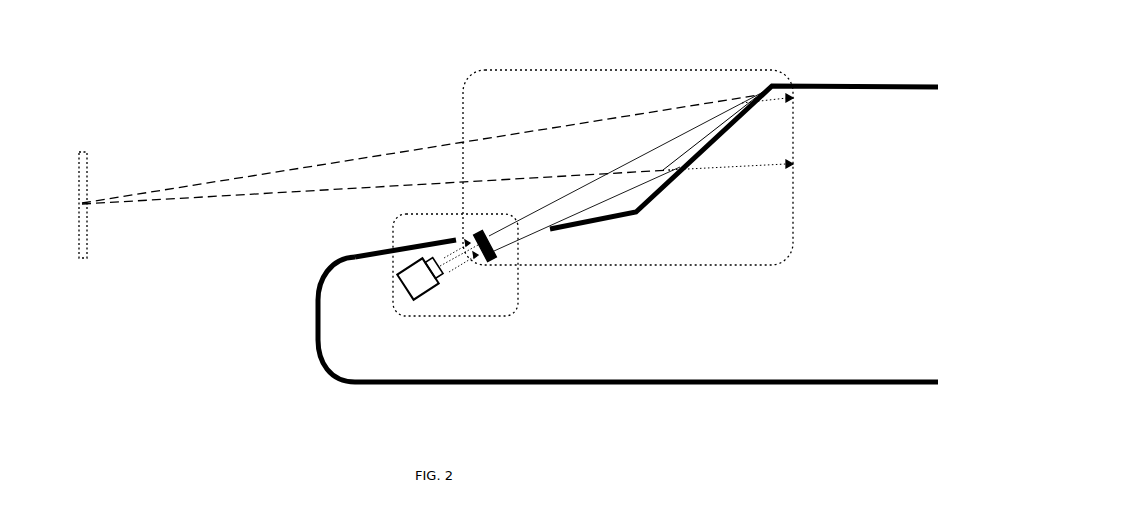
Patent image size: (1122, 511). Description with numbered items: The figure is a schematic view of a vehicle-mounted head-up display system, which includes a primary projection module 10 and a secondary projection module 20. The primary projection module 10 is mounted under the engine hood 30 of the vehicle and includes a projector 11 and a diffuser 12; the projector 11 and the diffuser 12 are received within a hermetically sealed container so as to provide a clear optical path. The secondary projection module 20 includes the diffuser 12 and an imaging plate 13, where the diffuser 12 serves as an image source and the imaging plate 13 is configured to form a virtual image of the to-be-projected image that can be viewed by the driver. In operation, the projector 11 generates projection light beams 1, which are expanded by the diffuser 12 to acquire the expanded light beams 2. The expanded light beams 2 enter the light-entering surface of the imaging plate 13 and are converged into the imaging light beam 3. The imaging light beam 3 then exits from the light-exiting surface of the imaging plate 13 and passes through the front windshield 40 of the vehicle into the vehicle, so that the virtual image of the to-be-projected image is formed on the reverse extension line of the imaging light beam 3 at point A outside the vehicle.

The point A is at (72, 205).
The projection light beams 1 is at (460, 265).
The expanded light beams 2 is at (630, 162).
The imaging light beam 3 is at (735, 166).
The primary projection module 10 is at (432, 316).
The projector 11 is at (430, 289).
The diffuser 12 is at (493, 253).
The imaging plate 13 is at (708, 138).
The secondary projection module 20 is at (630, 70).
The engine hood 30 is at (372, 254).
The front windshield 40 is at (653, 200).